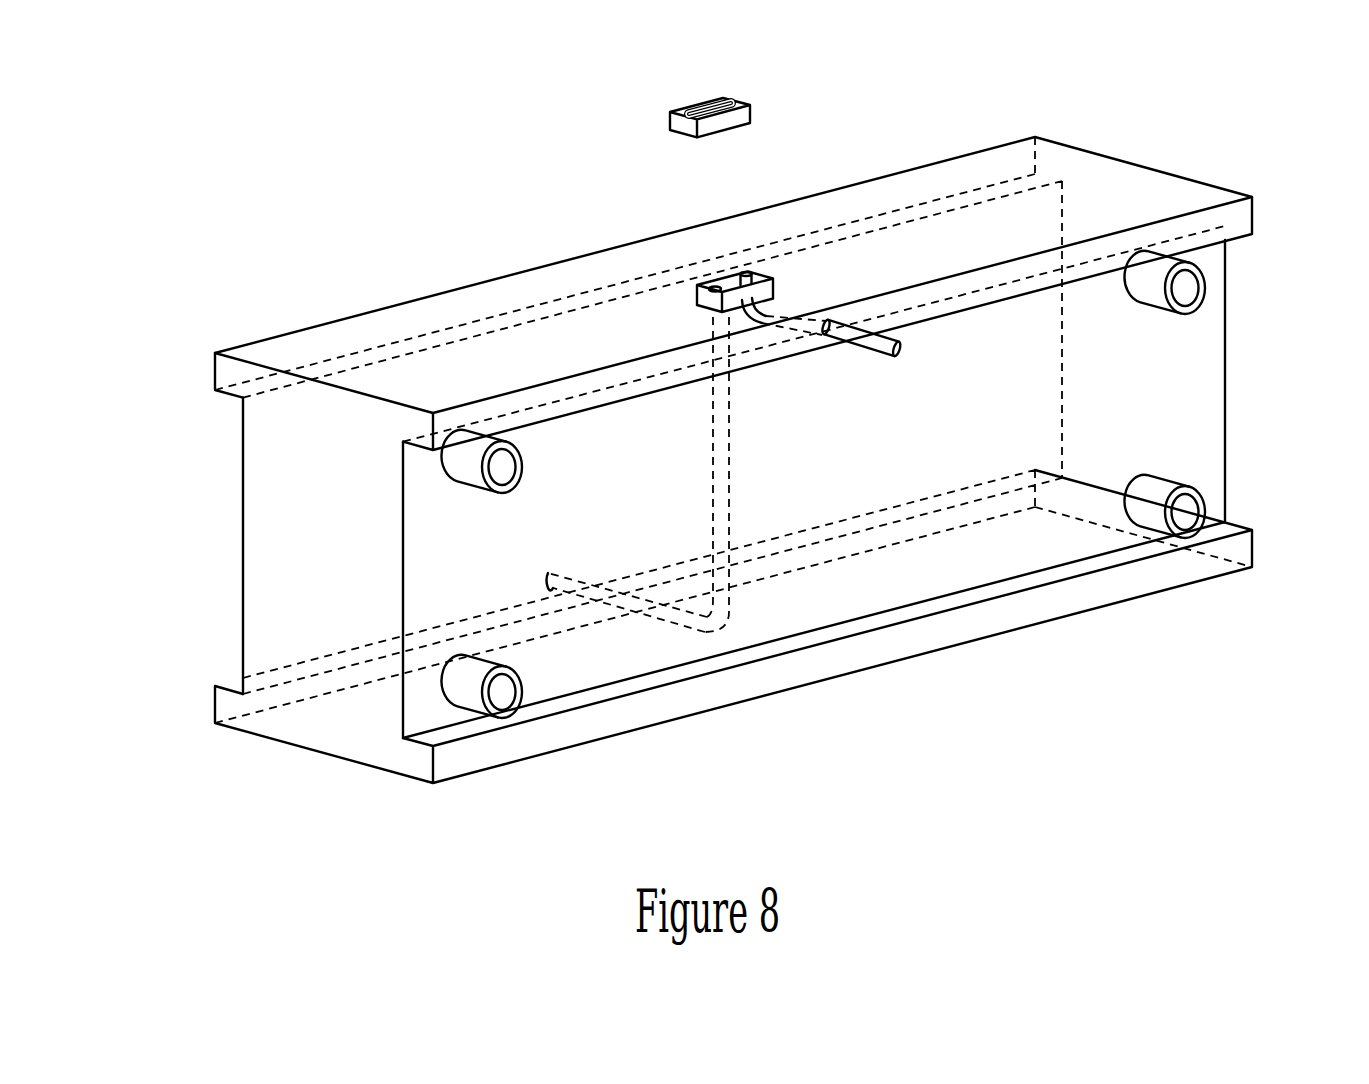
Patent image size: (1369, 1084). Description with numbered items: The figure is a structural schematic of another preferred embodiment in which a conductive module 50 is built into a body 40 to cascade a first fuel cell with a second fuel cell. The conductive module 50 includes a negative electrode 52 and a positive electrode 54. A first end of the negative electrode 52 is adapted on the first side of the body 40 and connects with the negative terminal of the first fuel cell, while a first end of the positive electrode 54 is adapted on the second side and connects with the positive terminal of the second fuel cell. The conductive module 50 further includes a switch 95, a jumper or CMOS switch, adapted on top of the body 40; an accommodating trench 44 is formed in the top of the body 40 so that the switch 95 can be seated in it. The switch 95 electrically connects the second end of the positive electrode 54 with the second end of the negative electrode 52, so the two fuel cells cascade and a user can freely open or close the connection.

The body 40 is at (704, 460).
The accommodating trench 44 is at (726, 280).
The conductive module 50 is at (907, 425).
The negative electrode 52 is at (903, 352).
The positive electrode 54 is at (721, 463).
The switch 95 is at (602, 95).